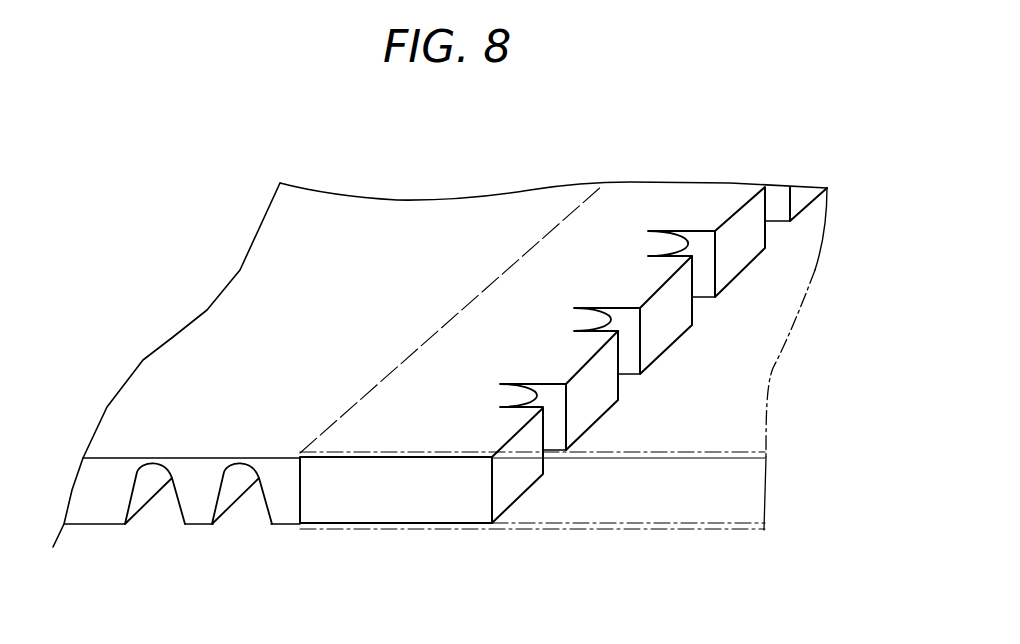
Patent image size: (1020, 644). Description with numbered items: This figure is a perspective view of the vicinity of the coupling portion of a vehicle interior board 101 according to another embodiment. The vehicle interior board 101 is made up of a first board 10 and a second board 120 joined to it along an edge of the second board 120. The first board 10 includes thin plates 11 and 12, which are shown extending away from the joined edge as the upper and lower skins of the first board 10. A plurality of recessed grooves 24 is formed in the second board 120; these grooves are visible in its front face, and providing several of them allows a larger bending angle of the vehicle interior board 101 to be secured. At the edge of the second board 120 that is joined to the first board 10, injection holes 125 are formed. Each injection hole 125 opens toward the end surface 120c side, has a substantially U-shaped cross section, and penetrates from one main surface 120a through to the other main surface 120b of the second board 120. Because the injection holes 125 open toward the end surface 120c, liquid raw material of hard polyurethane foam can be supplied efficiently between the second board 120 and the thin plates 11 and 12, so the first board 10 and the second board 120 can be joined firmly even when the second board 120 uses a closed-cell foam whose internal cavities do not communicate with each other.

The vehicle interior board 101 is at (633, 141).
The second board 120 is at (198, 243).
The one main surface 120a is at (338, 235).
The other main surface 120b is at (377, 483).
The end surface 120c is at (591, 391).
The injection hole 125 is at (563, 318).
The recessed groove 24 is at (158, 507).
The thin plate 11 is at (723, 452).
The thin plate 12 is at (627, 530).
The first board 10 is at (712, 537).